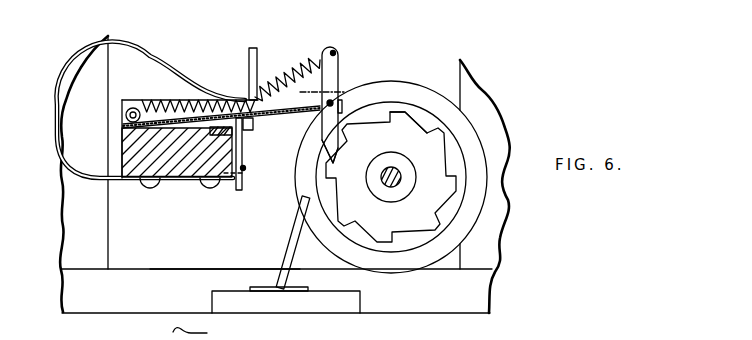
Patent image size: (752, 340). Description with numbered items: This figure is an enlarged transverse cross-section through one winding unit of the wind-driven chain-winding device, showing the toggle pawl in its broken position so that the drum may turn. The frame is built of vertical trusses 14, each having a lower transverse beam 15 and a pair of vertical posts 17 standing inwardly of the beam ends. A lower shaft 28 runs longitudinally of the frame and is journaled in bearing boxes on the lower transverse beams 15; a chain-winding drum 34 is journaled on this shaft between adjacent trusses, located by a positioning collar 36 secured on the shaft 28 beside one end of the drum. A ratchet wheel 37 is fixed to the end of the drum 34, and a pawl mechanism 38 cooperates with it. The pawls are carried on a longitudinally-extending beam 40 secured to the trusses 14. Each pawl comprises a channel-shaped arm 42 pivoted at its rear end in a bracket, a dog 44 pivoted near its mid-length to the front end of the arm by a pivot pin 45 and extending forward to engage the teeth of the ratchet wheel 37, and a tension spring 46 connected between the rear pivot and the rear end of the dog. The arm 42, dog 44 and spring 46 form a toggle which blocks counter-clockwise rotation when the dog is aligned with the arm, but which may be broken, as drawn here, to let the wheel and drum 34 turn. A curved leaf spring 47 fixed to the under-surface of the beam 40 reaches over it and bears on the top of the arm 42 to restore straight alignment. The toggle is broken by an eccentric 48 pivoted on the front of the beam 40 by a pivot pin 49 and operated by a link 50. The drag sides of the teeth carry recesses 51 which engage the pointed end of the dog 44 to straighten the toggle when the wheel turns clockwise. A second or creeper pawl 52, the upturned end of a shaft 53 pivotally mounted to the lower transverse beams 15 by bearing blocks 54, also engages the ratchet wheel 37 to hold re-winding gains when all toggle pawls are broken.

The truss 14 is at (66, 268).
The lower transverse beam 15 is at (197, 269).
The vertical post 17 is at (88, 44).
The lower shaft 28 is at (388, 189).
The chain-winding drum 34 is at (298, 186).
The positioning collar 36 is at (389, 153).
The ratchet wheel 37 is at (406, 220).
The pawl mechanism 38 is at (225, 91).
The beam 40 is at (182, 165).
The arm 42 is at (247, 121).
The dog 44 is at (339, 70).
The pivot pin 45 is at (326, 103).
The tension spring 46 is at (306, 62).
The curved leaf spring 47 is at (150, 57).
The eccentric 48 is at (234, 190).
The pivot pin 49 is at (245, 168).
The link 50 is at (249, 52).
The recess 51 is at (420, 101).
The second pawl 52 is at (345, 162).
The shaft 53 is at (282, 292).
The bearing block 54 is at (272, 287).